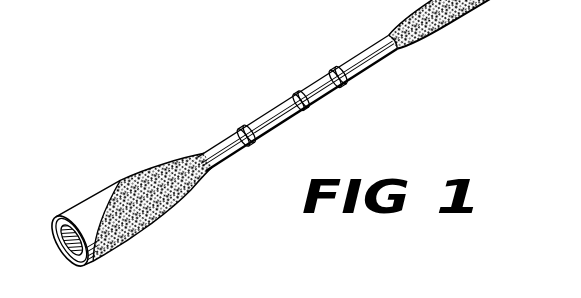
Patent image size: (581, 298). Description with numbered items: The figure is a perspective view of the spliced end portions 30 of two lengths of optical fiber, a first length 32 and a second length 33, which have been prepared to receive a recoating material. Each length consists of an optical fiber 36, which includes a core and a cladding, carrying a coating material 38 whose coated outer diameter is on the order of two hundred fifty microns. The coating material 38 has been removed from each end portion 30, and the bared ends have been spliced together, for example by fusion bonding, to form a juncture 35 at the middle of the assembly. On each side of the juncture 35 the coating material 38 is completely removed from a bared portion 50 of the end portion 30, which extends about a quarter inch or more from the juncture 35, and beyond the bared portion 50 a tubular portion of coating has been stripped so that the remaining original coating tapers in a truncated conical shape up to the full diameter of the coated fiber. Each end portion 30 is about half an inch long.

The end portion 30 is at (145, 150).
The first length 32 is at (78, 204).
The second length 33 is at (473, 8).
The juncture 35 is at (294, 94).
The optical fiber 36 is at (64, 244).
The coating material 38 is at (54, 230).
The bared portion 50 is at (239, 128).